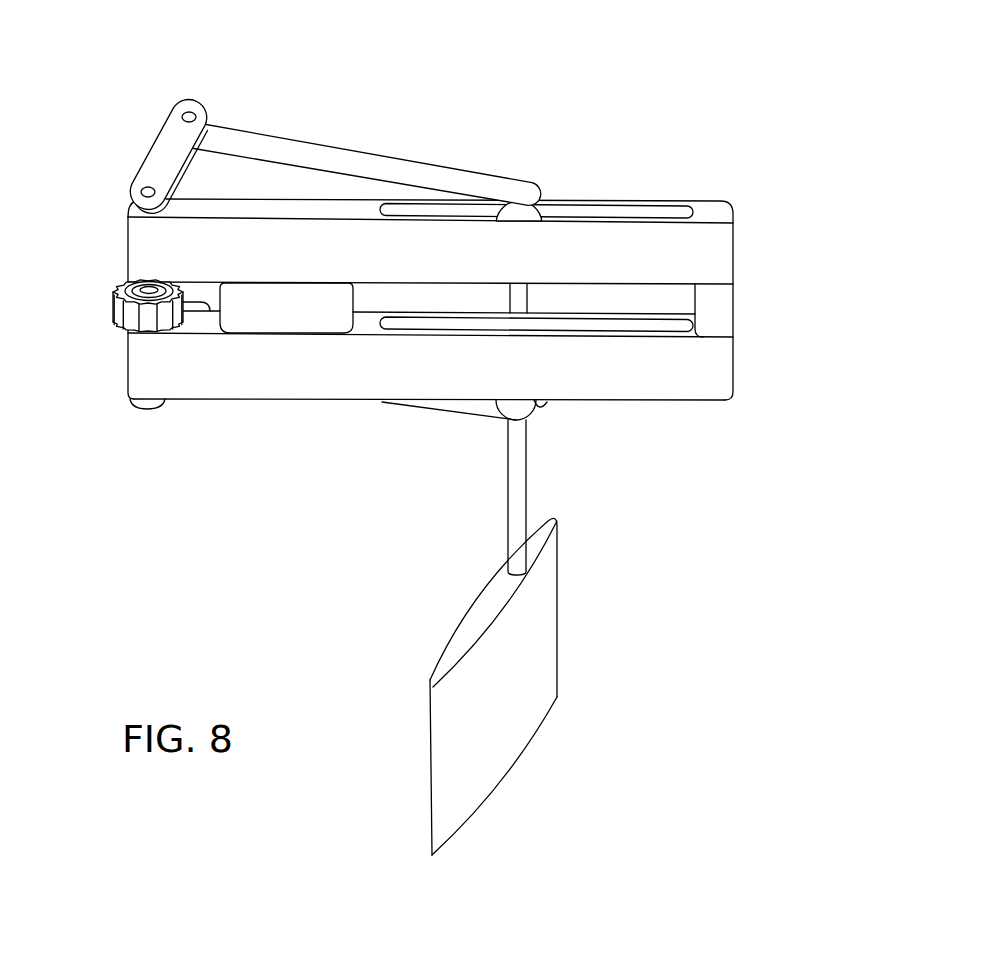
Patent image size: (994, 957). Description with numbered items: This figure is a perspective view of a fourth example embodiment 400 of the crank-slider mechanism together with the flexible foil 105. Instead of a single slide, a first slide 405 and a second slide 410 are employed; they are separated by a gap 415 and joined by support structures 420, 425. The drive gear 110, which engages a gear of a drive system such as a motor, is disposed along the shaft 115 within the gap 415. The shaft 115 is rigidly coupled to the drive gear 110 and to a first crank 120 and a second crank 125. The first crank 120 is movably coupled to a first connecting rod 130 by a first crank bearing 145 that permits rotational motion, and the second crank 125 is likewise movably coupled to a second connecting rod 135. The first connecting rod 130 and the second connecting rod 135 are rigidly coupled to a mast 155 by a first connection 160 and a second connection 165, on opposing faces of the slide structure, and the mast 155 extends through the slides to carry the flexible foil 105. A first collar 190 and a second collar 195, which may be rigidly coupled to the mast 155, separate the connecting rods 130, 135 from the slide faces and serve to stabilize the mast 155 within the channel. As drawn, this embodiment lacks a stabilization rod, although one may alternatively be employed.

The fourth example embodiment 400 is at (591, 74).
The flexible foil 105 is at (560, 642).
The drive gear 110 is at (110, 308).
The shaft 115 is at (122, 281).
The first crank 120 is at (167, 157).
The second crank 125 is at (135, 403).
The first connecting rod 130 is at (360, 157).
The second connecting rod 135 is at (447, 405).
The first crank bearing 145 is at (191, 107).
The mast 155 is at (528, 486).
The first connection 160 is at (548, 193).
The second connection 165 is at (531, 420).
The first collar 190 is at (571, 203).
The second collar 195 is at (541, 406).
The first slide 405 is at (334, 269).
The second slide 410 is at (334, 373).
The gap 415 is at (633, 302).
The support structure 420 is at (735, 305).
The support structure 425 is at (261, 322).